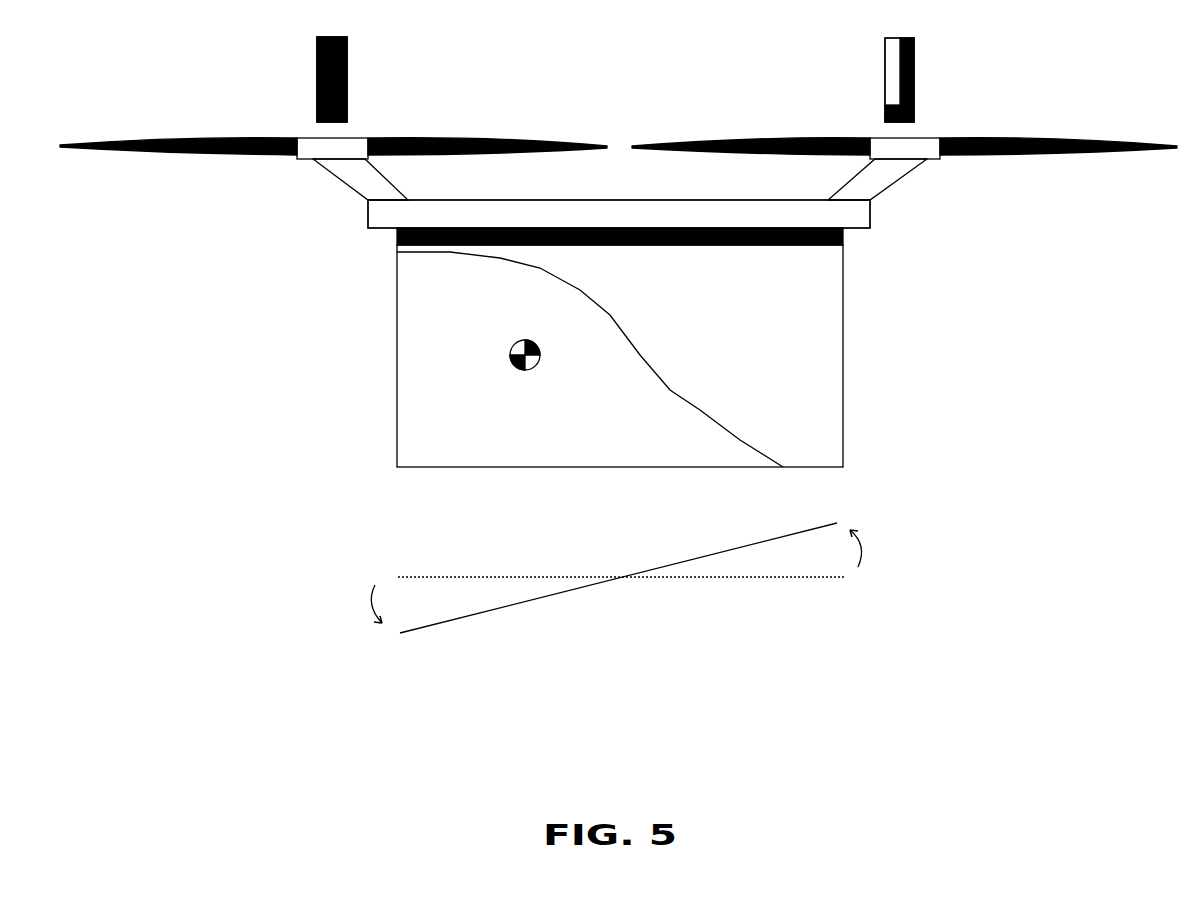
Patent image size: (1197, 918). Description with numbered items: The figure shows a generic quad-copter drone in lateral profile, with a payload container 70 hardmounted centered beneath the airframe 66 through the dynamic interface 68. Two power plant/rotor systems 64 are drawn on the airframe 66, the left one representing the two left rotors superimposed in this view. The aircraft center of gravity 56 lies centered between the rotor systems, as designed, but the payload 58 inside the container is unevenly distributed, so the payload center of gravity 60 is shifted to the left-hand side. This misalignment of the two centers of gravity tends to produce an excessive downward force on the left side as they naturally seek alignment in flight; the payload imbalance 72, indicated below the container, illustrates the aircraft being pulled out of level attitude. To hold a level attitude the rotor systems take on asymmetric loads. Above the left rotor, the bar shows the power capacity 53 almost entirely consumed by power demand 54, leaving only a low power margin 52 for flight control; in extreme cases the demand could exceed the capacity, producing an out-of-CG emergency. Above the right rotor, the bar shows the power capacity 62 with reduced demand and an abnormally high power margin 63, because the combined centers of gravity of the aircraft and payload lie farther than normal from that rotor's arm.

The low power margin 52 is at (317, 40).
The power capacity 53 is at (347, 68).
The power demand 54 is at (317, 102).
The aircraft center of gravity 56 is at (623, 215).
The payload 58 is at (410, 295).
The payload center of gravity 60 is at (510, 355).
The power capacity 62 is at (914, 47).
The high power margin 63 is at (885, 47).
The power plant/rotor system 64 is at (902, 148).
The airframe 66 is at (870, 212).
The dynamic interface 68 is at (843, 237).
The payload container 70 is at (843, 355).
The payload imbalance 72 is at (885, 577).